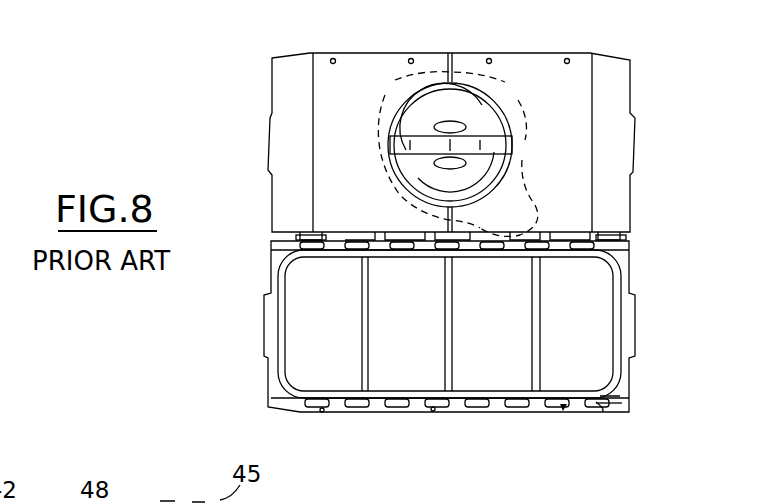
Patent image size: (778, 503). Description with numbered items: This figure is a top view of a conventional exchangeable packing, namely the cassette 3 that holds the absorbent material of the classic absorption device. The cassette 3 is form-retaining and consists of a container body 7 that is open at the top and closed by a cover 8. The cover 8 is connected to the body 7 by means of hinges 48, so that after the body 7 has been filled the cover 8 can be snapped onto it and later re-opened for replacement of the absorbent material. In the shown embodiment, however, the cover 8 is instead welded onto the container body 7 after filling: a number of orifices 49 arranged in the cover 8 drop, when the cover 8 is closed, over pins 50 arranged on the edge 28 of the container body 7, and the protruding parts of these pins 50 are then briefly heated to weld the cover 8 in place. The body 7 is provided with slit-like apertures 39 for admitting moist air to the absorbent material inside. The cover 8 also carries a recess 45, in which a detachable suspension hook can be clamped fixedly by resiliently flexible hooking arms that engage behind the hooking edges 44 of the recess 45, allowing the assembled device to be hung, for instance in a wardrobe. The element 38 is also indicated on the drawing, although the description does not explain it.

The cassette 3 is at (640, 236).
The body 7 is at (262, 375).
The cover 8 is at (266, 76).
The edge 28 is at (600, 405).
The stud 38 is at (487, 252).
The slit-like apertures 39 is at (356, 252).
The hooking edges 44 is at (408, 82).
The recess 45 is at (487, 122).
The hinges 48 is at (295, 234).
The orifices 49 is at (411, 58).
The pins 50 is at (331, 400).